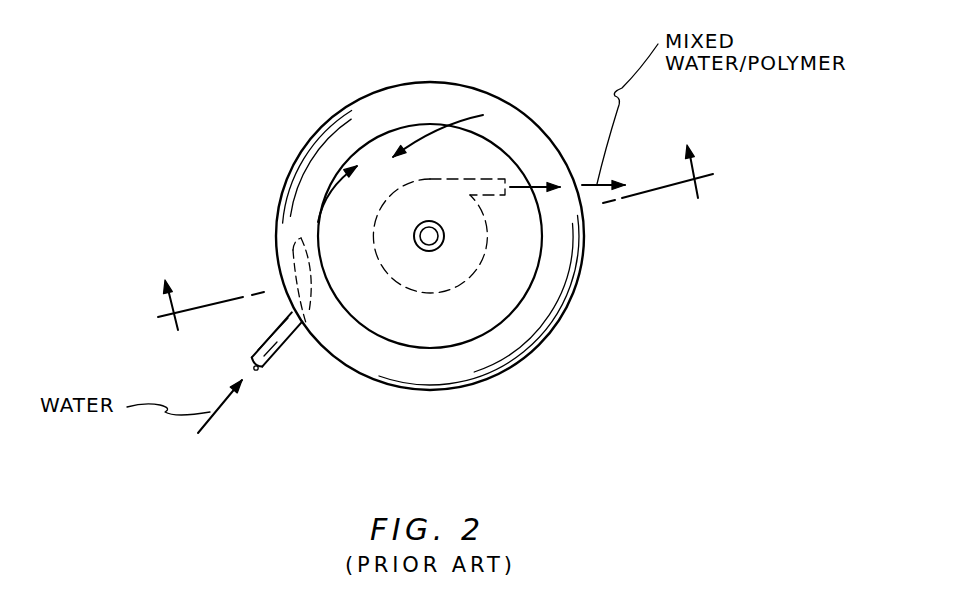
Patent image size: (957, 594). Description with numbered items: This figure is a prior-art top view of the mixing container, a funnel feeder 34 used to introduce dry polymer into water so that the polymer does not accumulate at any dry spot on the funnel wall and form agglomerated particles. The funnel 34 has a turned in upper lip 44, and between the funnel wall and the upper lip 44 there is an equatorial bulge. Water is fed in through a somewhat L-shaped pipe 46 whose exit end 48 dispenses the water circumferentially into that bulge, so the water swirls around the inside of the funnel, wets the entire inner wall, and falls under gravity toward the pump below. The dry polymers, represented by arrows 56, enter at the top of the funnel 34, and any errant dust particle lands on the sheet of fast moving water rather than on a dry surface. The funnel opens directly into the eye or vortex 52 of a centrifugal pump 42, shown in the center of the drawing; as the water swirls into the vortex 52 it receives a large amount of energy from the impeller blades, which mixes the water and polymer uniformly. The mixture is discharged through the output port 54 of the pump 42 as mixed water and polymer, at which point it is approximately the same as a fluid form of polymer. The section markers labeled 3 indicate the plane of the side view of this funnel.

The funnel 34 is at (572, 315).
The turned in upper lip 44 is at (538, 270).
The centrifugal pump 42 is at (455, 290).
The vortex 52 is at (428, 251).
The output port 54 is at (477, 179).
The dry polymers 56 is at (419, 140).
The L-shaped pipe 46 is at (273, 357).
The exit end 48 is at (296, 252).
The section line for FIG. 3 is at (427, 235).